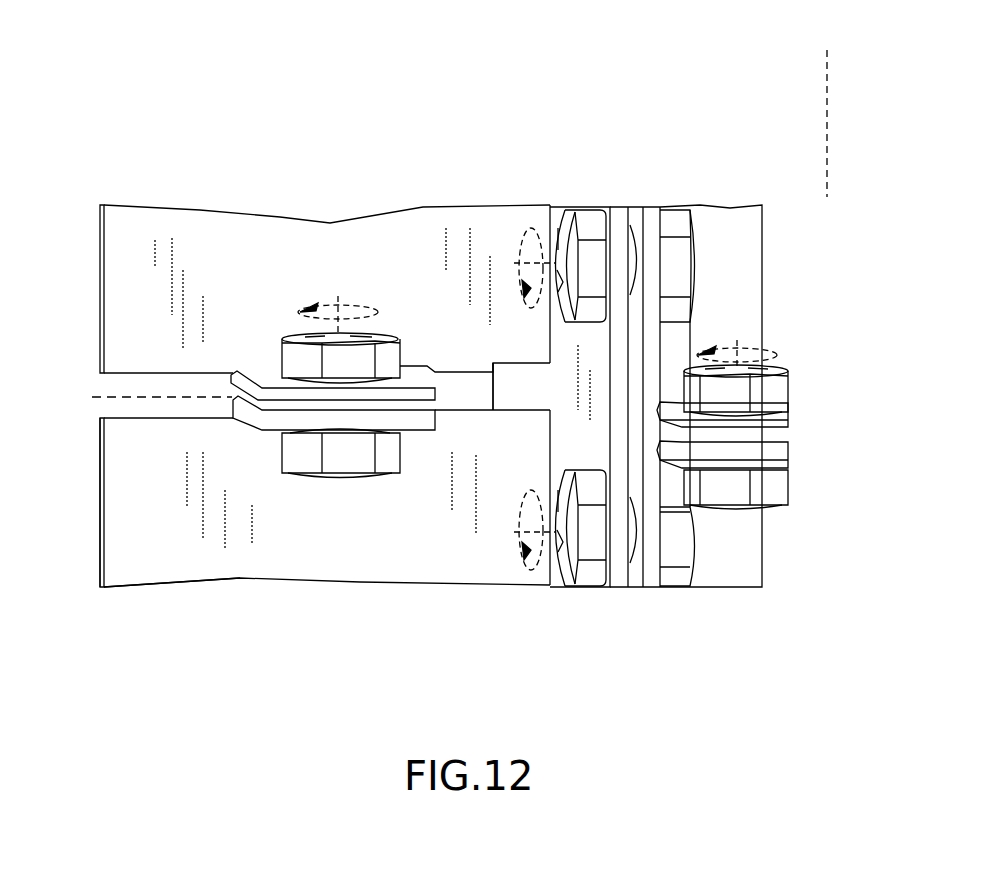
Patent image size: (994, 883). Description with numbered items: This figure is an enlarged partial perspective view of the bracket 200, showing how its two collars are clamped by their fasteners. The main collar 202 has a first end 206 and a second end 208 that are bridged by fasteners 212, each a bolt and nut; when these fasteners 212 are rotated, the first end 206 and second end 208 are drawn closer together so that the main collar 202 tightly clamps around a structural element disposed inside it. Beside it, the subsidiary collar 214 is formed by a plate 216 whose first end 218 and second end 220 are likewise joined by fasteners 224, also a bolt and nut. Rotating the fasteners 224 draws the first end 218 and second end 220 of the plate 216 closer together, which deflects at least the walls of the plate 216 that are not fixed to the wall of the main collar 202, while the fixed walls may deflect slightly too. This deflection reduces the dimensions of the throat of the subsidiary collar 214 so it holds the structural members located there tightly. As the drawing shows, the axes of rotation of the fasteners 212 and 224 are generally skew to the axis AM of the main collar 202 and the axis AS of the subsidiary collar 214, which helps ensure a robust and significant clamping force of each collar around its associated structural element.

The bracket 200 is at (388, 170).
The main collar 202 is at (766, 216).
The first end 206 is at (618, 372).
The second end 208 is at (650, 342).
The fasteners 212 is at (572, 214).
The subsidiary collar 214 is at (96, 545).
The plate 216 is at (368, 555).
The first end 218 is at (266, 425).
The second end 220 is at (266, 373).
The fasteners 224 is at (370, 337).
The axis of the main collar AM is at (827, 109).
The axis of the subsidiary collar AS is at (143, 398).